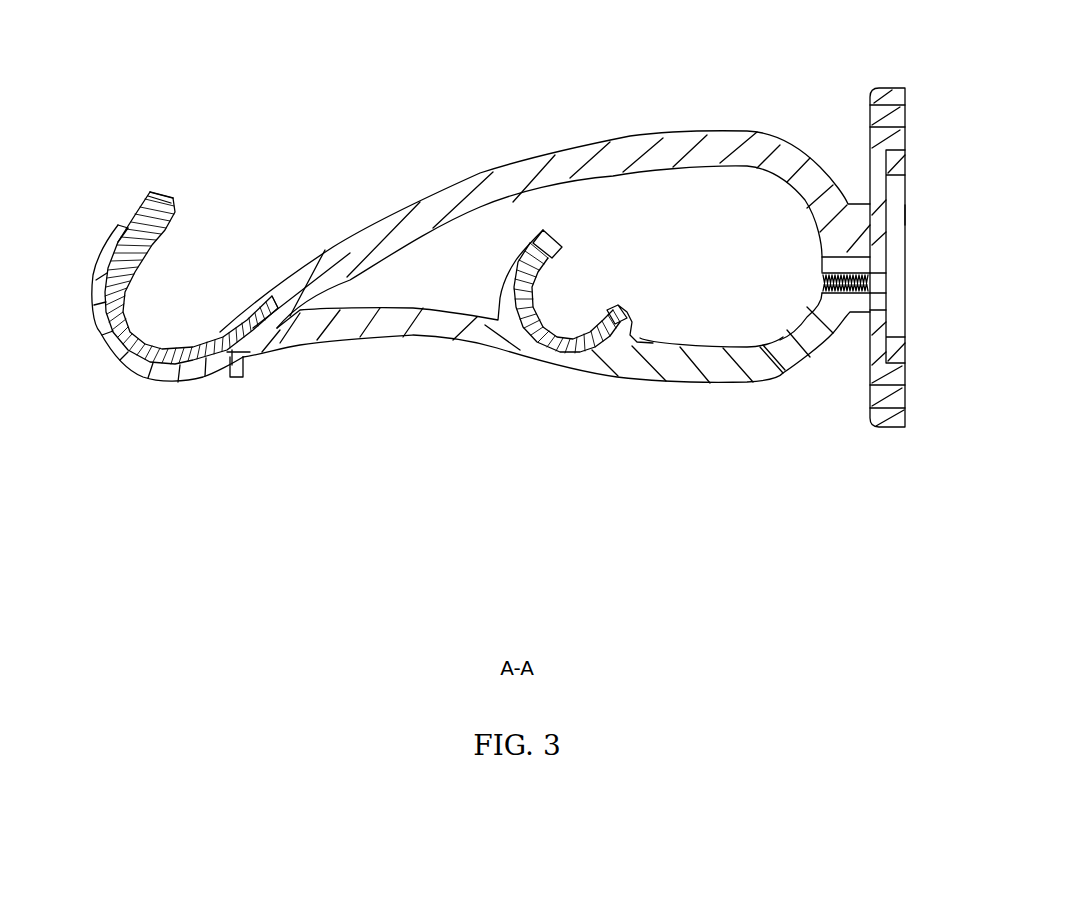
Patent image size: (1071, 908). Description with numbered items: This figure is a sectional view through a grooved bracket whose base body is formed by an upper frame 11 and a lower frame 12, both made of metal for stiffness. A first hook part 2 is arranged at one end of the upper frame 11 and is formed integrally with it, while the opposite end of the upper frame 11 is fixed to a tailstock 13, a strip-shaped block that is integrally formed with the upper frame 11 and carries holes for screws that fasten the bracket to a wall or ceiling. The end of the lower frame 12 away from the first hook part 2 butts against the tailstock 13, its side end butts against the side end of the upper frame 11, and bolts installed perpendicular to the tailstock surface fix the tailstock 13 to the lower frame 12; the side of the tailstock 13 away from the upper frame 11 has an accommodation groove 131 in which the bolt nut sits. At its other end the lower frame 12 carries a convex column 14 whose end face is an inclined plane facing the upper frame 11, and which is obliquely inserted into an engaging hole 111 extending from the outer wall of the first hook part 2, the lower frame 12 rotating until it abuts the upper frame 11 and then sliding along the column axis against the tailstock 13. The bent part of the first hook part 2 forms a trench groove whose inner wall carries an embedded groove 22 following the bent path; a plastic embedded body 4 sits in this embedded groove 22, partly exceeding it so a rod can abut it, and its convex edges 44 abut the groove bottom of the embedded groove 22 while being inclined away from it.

The first hook part 2 is at (143, 367).
The embedded body 4 is at (183, 350).
The upper frame 11 is at (725, 130).
The lower frame 12 is at (697, 372).
The tailstock 13 is at (890, 97).
The convex column 14 is at (253, 340).
The embedded groove 22 is at (112, 228).
The convex edge 44 is at (160, 210).
The engaging hole 111 is at (237, 368).
The accommodation groove 131 is at (905, 215).